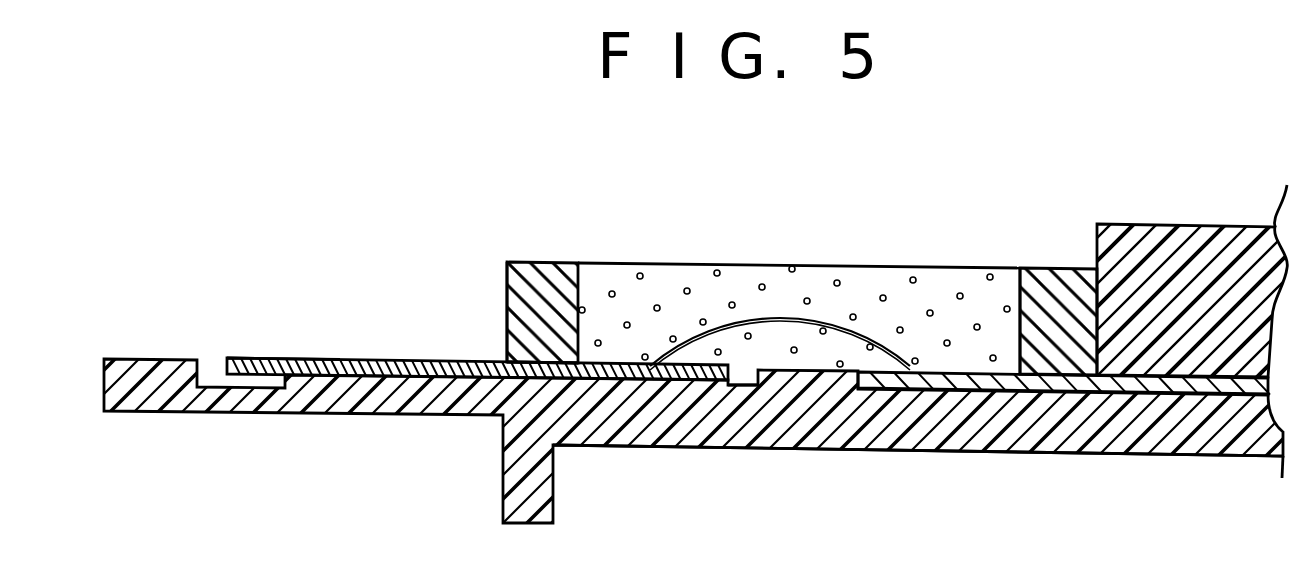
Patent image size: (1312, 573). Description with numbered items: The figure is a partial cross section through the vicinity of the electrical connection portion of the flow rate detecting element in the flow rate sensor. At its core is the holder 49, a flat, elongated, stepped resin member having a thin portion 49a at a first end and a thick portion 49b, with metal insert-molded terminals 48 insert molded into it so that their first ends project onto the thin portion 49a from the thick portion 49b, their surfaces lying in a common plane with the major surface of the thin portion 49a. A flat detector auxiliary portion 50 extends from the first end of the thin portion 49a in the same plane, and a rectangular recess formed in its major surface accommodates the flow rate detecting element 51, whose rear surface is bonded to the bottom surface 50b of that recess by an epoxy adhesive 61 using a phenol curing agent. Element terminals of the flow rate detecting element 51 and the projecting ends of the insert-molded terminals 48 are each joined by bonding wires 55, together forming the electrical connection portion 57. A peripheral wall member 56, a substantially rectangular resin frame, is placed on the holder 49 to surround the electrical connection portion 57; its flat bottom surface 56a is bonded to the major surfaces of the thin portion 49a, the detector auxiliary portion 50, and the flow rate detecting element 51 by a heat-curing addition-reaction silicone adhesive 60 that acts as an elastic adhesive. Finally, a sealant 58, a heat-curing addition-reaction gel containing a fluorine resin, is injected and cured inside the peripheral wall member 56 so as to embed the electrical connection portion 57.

The insert-molded terminals 48 is at (1062, 372).
The holder 49 is at (1056, 445).
The thin portion 49a is at (863, 437).
The thick portion 49b is at (1203, 226).
The detector auxiliary portion 50 is at (357, 412).
The bottom surface 50b is at (688, 386).
The flow rate detecting element 51 is at (372, 367).
The bonding wires 55 is at (782, 318).
The peripheral wall member 56 is at (557, 262).
The bottom surface 56a is at (556, 369).
The electrical connection portion 57 is at (988, 308).
The sealant 58 is at (890, 283).
The silicone adhesive 60 is at (505, 341).
The epoxy adhesive 61 is at (328, 368).